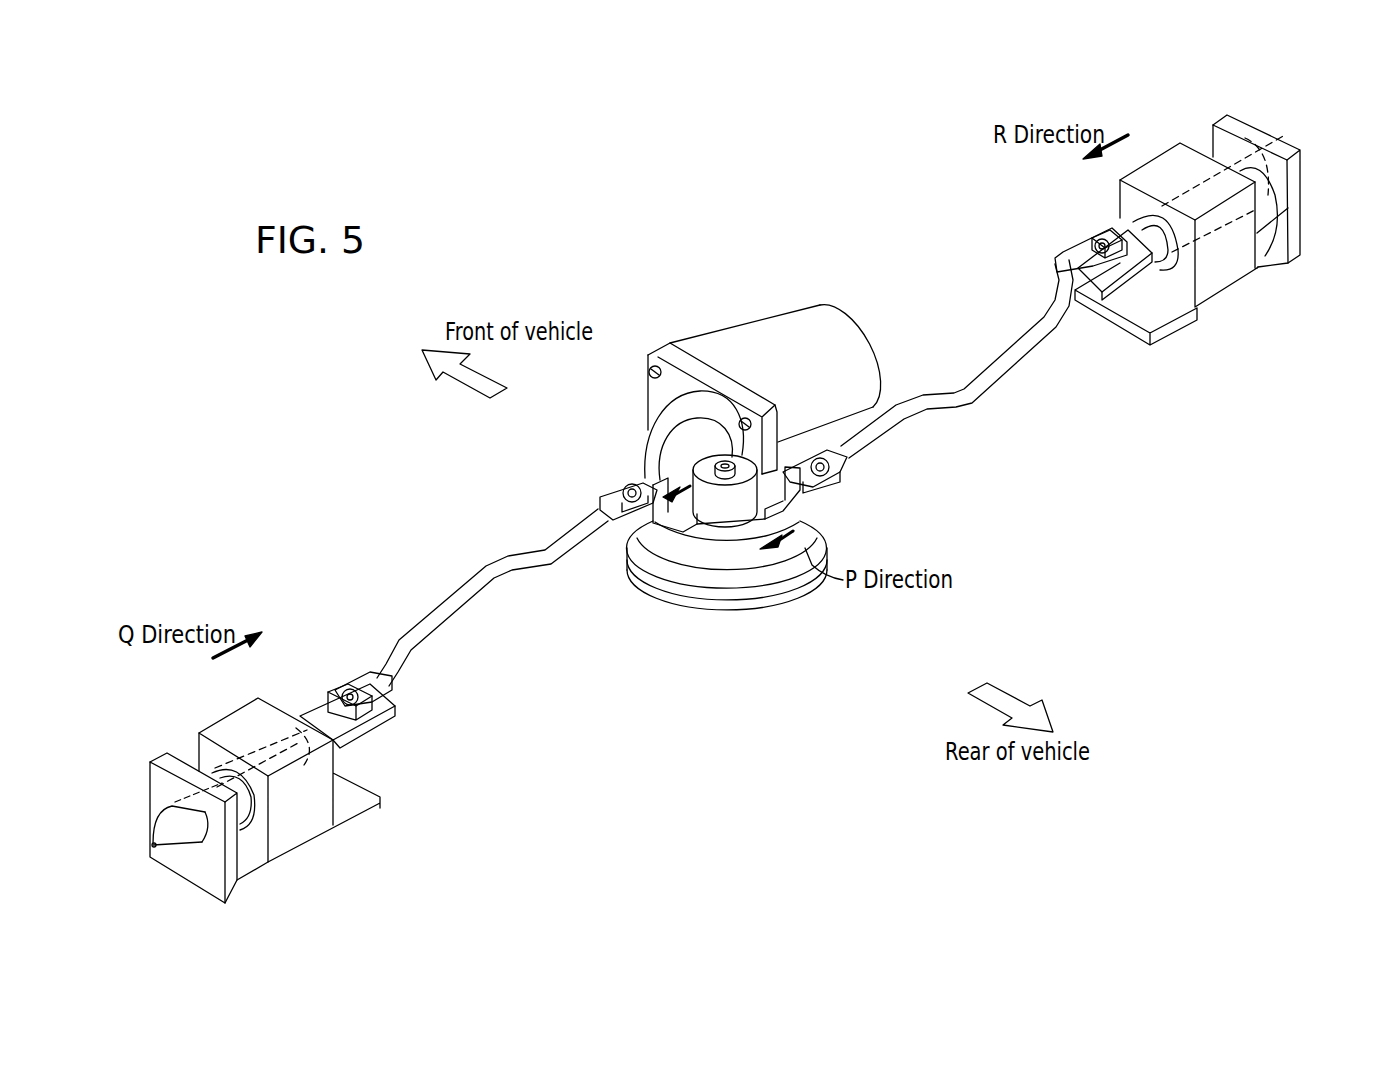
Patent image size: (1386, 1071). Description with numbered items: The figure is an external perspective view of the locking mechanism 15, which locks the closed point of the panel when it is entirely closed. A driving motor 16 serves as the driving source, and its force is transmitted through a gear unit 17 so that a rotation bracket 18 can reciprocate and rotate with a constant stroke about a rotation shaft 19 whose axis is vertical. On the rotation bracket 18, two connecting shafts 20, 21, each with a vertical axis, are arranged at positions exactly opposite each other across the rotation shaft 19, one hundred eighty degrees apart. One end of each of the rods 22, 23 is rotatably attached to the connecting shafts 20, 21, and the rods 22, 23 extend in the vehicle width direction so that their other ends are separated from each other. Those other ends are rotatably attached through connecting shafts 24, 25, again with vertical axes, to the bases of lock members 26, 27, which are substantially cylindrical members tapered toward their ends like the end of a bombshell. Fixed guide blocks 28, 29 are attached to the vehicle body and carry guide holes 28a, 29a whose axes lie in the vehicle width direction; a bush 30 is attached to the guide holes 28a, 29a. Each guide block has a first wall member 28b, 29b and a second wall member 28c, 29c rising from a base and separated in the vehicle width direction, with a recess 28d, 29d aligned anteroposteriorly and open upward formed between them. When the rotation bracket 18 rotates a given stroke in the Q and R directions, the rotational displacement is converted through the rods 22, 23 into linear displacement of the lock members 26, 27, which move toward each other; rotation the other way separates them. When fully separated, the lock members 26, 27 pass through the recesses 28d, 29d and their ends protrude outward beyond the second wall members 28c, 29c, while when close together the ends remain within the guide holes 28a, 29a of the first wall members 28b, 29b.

The locking mechanism 15 is at (610, 310).
The driving motor 16 is at (758, 358).
The gear unit 17 is at (795, 585).
The rotation bracket 18 is at (815, 522).
The rotation shaft 19 is at (724, 462).
The connecting shaft 20 is at (632, 490).
The connecting shaft 21 is at (838, 470).
The rod 22 is at (553, 561).
The rod 23 is at (890, 428).
The connecting shaft 24 is at (350, 696).
The connecting shaft 25 is at (1100, 246).
The lock member 26 is at (365, 738).
The lock member 27 is at (1280, 262).
The guide block 28 is at (358, 820).
The guide hole 28a is at (210, 838).
The first wall member 28b is at (300, 828).
The second wall member 28c is at (168, 862).
The recess 28d is at (180, 750).
The guide block 29 is at (1120, 340).
The guide hole 29a is at (1253, 133).
The first wall member 29b is at (1218, 270).
The second wall member 29c is at (1302, 220).
The recess 29d is at (1206, 141).
The bush 30 is at (243, 835).